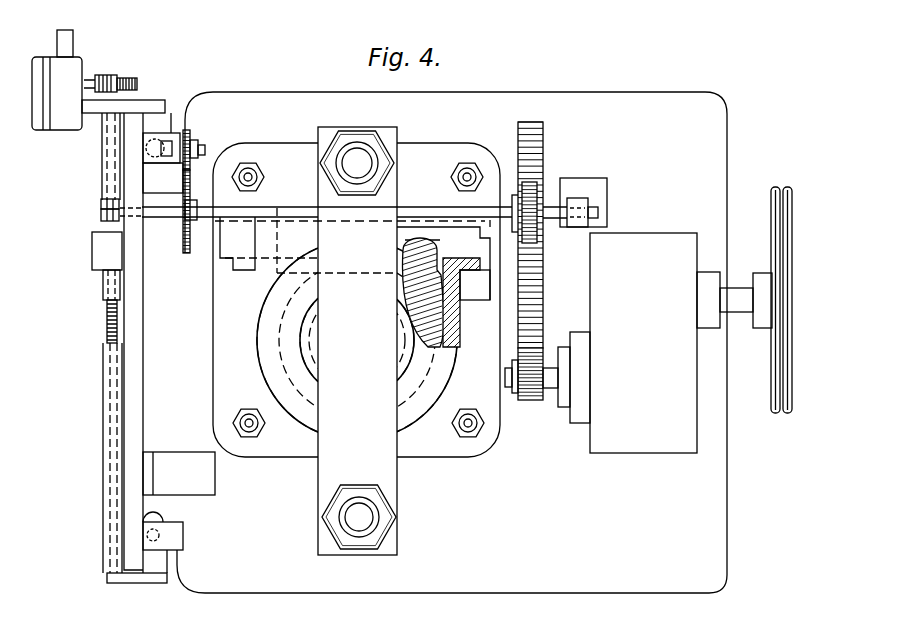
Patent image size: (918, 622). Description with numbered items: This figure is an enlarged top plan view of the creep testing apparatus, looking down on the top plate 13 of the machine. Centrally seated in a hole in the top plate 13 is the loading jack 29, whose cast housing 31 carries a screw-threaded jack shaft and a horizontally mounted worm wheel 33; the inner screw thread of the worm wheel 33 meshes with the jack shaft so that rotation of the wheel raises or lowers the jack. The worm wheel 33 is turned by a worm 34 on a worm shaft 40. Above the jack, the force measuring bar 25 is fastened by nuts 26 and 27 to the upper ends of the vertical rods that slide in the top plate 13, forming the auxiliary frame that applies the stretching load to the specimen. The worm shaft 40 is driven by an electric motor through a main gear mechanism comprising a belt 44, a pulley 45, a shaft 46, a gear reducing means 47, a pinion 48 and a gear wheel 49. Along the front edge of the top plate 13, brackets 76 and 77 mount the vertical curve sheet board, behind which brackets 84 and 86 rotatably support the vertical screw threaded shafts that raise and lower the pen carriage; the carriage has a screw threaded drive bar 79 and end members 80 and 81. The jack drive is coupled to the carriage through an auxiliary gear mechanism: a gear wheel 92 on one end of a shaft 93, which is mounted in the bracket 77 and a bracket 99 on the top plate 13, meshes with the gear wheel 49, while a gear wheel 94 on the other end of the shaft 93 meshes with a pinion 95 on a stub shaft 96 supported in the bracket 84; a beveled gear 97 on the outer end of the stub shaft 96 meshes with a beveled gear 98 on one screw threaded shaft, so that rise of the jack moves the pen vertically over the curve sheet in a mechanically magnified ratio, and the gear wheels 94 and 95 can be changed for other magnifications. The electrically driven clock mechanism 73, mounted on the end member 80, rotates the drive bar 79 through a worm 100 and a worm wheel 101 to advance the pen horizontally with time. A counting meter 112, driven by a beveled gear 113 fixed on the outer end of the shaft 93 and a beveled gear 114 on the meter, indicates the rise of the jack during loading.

The top plate 13 is at (281, 96).
The force measuring bar 25 is at (323, 475).
The nut 26 is at (333, 523).
The nut 27 is at (333, 148).
The loading jack 29 is at (307, 418).
The housing 31 is at (458, 343).
The worm wheel 33 is at (440, 312).
The worm 34 is at (427, 258).
The worm shaft 40 is at (444, 284).
The belt 44 is at (773, 186).
The pulley 45 is at (798, 182).
The shaft 46 is at (738, 288).
The gear reducing means 47 is at (648, 240).
The pinion 48 is at (530, 400).
The gear wheel 49 is at (544, 136).
The clock mechanism 73 is at (38, 63).
The bracket 76 is at (152, 452).
The bracket 77 is at (145, 228).
The screw threaded drive bar 79 is at (107, 320).
The end member 80 is at (148, 106).
The end member 81 is at (123, 585).
The bracket 84 is at (145, 163).
The bracket 86 is at (178, 550).
The gear wheel 92 is at (540, 182).
The shaft 93 is at (506, 207).
The gear wheel 94 is at (188, 175).
The pinion 95 is at (188, 135).
The stub shaft 96 is at (202, 148).
The beveled gear 97 is at (172, 122).
The beveled gear 98 is at (165, 137).
The bracket 99 is at (607, 178).
The worm 100 is at (106, 75).
The worm wheel 101 is at (135, 82).
The counting meter 112 is at (98, 265).
The beveled gear 113 is at (107, 207).
The beveled gear 114 is at (102, 217).